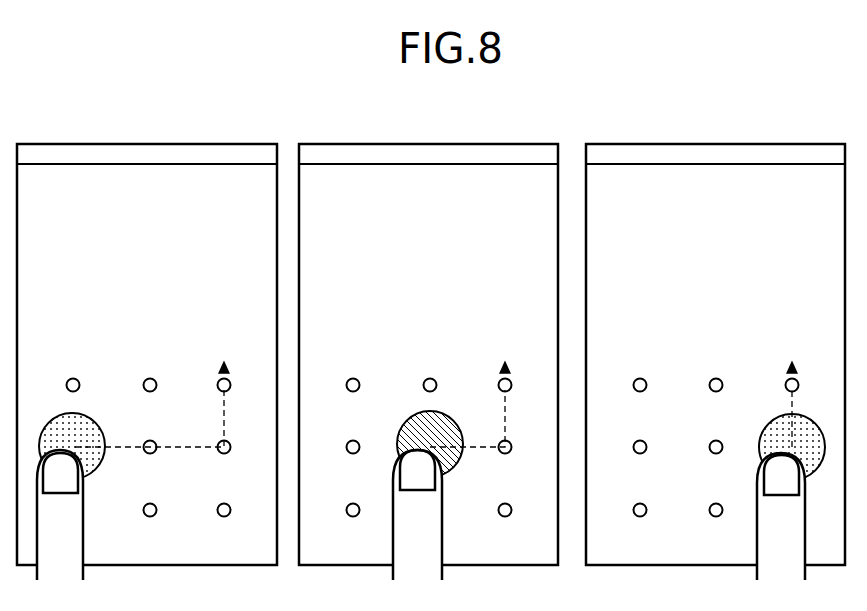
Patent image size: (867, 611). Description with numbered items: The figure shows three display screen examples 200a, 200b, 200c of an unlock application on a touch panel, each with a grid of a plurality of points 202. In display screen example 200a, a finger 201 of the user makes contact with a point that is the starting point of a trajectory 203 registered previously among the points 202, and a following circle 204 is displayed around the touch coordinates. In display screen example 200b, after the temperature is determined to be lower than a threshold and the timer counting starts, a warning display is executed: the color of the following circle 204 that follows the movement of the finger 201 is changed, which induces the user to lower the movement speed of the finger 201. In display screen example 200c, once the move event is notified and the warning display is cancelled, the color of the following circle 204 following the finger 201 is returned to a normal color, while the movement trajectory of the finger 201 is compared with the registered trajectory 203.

The display screen example 200a is at (143, 141).
The display screen example 200b is at (415, 141).
The display screen example 200c is at (697, 141).
The finger 201 is at (67, 547).
The points 202 is at (76, 379).
The trajectory 203 is at (226, 363).
The following circle 204 is at (94, 417).